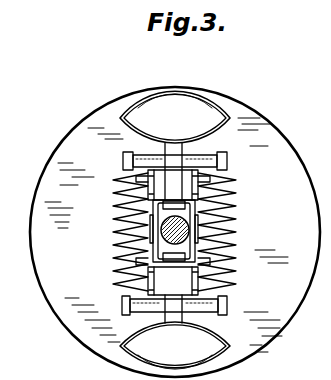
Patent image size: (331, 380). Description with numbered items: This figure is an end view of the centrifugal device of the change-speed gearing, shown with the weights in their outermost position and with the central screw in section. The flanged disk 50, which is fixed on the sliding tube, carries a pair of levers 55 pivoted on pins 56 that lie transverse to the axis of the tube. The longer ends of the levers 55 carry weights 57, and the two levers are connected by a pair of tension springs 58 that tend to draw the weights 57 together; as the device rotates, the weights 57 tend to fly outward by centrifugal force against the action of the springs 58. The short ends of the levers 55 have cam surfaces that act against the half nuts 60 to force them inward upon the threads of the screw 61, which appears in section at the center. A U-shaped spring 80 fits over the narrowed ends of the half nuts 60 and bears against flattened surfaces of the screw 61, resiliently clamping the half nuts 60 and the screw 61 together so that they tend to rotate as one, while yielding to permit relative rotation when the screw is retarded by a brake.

The flanged disk 50 is at (266, 333).
The levers 55 is at (178, 155).
The pins 56 is at (208, 171).
The weights 57 is at (197, 114).
The tension springs 58 is at (234, 216).
The half nuts 60 is at (147, 262).
The screw 61 is at (197, 233).
The U-shaped spring 80 is at (199, 190).